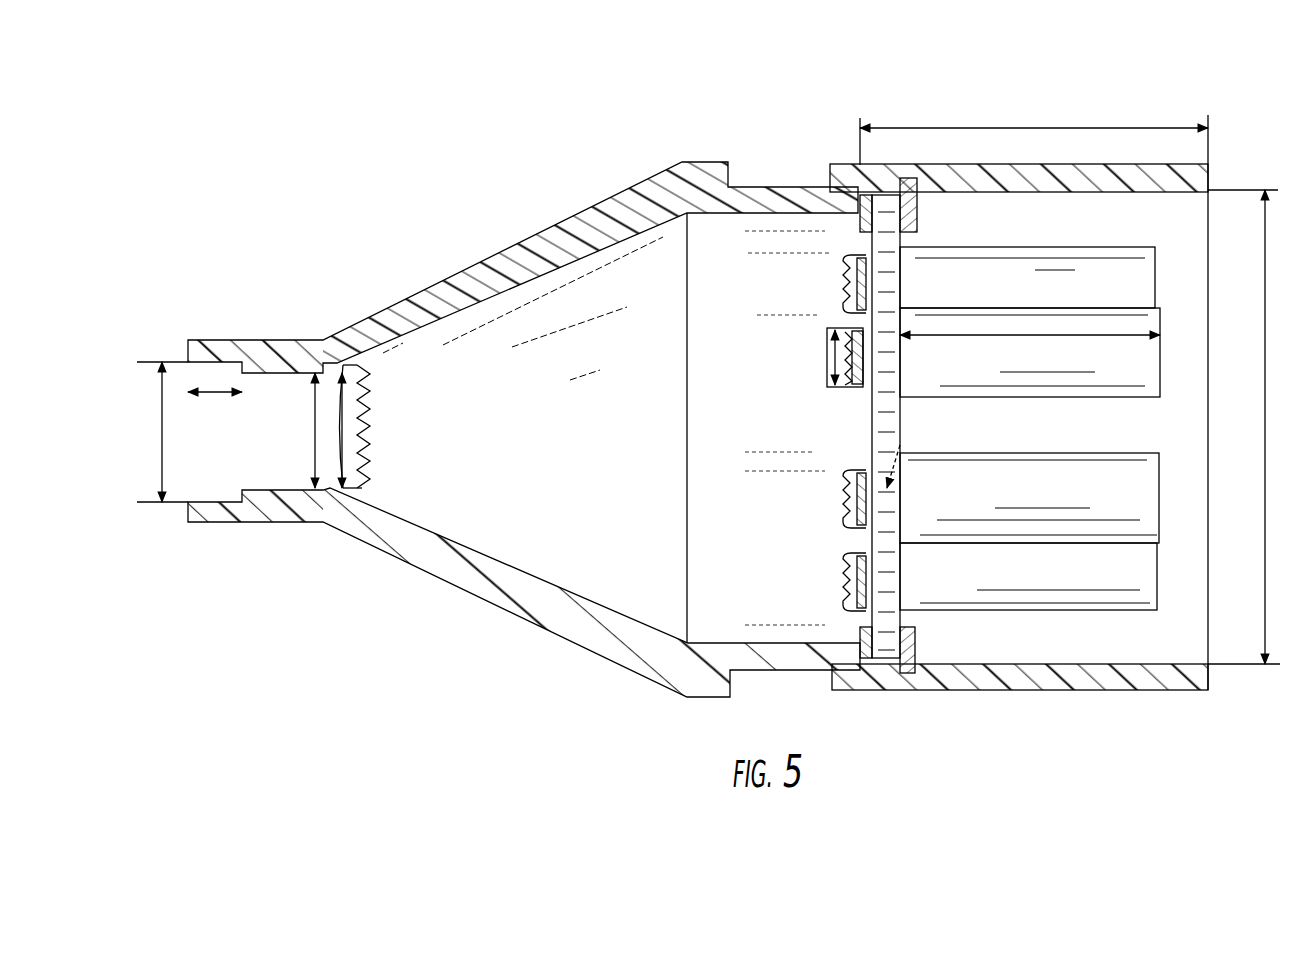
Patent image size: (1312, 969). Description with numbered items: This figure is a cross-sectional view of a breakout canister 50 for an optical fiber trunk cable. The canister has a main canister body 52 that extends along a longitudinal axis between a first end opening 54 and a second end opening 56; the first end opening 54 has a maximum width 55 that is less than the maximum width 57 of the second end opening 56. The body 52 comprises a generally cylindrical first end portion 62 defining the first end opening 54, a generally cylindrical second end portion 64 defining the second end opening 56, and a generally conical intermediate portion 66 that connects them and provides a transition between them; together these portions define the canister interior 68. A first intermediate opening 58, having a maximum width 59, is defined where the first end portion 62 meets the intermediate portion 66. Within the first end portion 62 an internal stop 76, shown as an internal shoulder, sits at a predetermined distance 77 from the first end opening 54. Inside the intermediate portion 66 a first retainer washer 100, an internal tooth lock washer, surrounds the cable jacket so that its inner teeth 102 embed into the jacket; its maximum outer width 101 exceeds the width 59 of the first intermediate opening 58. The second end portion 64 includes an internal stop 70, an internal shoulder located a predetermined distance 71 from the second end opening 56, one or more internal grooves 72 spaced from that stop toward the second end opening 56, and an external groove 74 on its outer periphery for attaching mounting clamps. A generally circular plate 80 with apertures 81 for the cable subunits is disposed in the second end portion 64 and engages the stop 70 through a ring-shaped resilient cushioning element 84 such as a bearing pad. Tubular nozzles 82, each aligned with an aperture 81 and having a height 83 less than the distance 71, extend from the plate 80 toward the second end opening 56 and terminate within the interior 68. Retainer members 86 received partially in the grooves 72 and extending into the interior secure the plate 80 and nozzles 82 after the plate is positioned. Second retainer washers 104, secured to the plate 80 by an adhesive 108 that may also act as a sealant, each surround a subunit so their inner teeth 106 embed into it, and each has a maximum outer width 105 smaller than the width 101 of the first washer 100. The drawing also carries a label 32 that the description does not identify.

The breakout canister 50 is at (584, 116).
The main canister body 52 is at (656, 163).
The intermediate portion 66 is at (490, 260).
The first end portion 62 is at (288, 338).
The internal stop 76 is at (222, 368).
The first intermediate opening 58 is at (255, 524).
The first end opening 54 is at (180, 376).
The inlet bore 32 is at (205, 445).
The maximum width 55 is at (160, 467).
The predetermined distance 77 is at (205, 397).
The maximum width 59 is at (313, 407).
The maximum outer width 101 is at (338, 432).
The retainer washer 100 is at (378, 382).
The inner teeth 102 is at (372, 408).
The canister interior 68 is at (707, 431).
The second end portion 64 is at (1105, 160).
The second end opening 56 is at (1216, 387).
The internal stop 70 is at (852, 200).
The predetermined distance 71 is at (987, 122).
The internal grooves 72 is at (960, 193).
The external groove 74 is at (800, 184).
The adhesive 108 is at (862, 212).
The plate 80 is at (872, 443).
The apertures 81 is at (903, 444).
The second retainer washer 104 is at (840, 288).
The maximum outer width 105 is at (832, 368).
The inner teeth 106 is at (845, 489).
The cushioning element 84 is at (858, 634).
The retainer members 86 is at (918, 648).
The nozzles 82 is at (1140, 368).
The height 83 is at (983, 336).
The maximum width 57 is at (1268, 570).